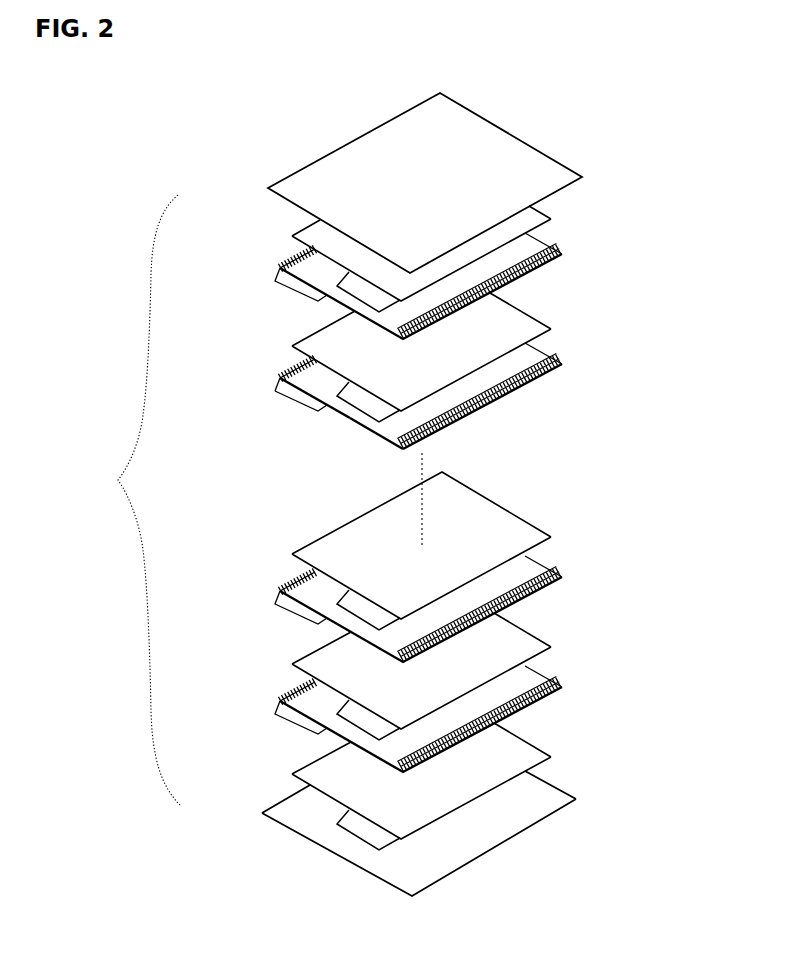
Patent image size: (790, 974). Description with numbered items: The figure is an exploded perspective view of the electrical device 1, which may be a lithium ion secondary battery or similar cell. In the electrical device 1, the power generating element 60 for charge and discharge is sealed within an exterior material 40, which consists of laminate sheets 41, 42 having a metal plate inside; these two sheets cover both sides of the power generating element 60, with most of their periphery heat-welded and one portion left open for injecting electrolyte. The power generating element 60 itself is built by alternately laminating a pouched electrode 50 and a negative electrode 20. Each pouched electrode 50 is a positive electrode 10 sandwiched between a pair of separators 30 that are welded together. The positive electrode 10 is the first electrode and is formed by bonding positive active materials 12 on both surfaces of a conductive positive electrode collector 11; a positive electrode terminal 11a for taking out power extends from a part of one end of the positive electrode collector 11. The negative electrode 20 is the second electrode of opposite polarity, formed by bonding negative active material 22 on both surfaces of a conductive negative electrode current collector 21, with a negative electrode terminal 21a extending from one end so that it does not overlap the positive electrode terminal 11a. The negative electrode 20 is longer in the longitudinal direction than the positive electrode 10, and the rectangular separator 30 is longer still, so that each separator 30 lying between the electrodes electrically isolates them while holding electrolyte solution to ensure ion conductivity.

The electrical device 1 is at (65, 100).
The positive electrode 10 is at (269, 501).
The positive electrode collector 11 is at (276, 400).
The positive electrode terminal 11a is at (317, 410).
The positive active material 12 is at (358, 408).
The negative electrode 20 is at (287, 234).
The negative electrode current collector 21 is at (336, 442).
The negative electrode terminal 21a is at (338, 418).
The negative active material 22 is at (551, 329).
The separator 30 is at (567, 358).
The exterior material 40 is at (263, 188).
The laminate sheet 41 is at (567, 162).
The laminate sheet 42 is at (568, 808).
The pouched electrode 50 is at (376, 502).
The power generating element 60 is at (135, 500).